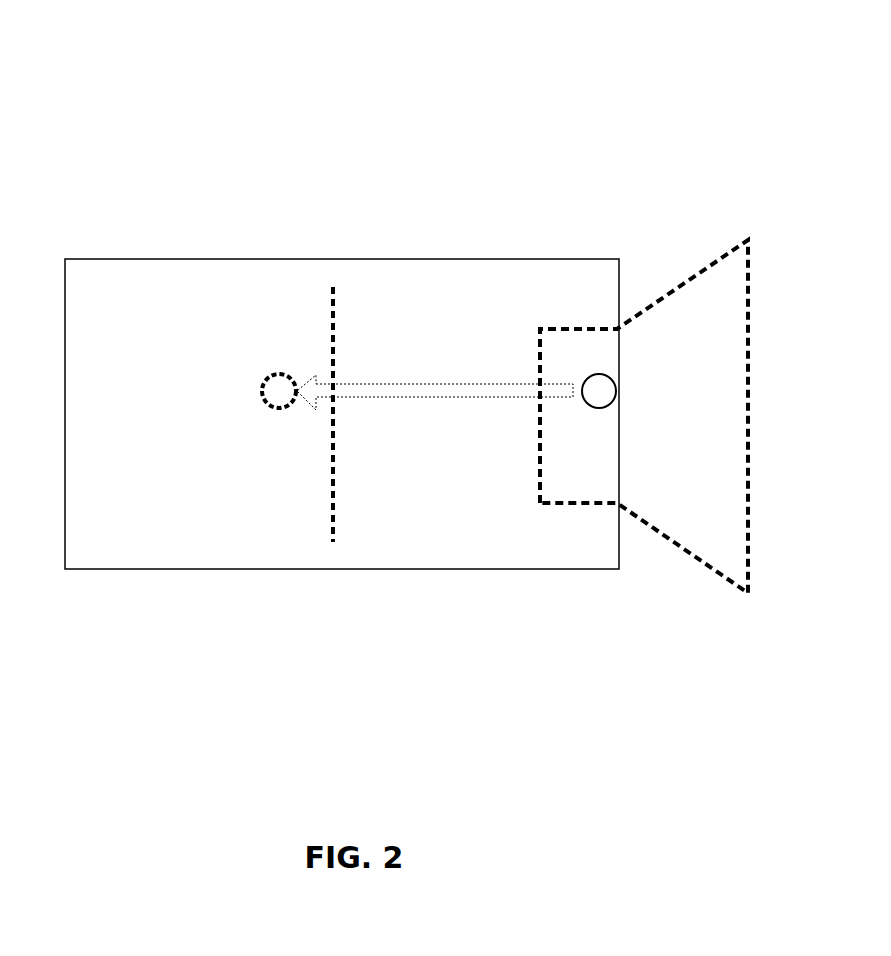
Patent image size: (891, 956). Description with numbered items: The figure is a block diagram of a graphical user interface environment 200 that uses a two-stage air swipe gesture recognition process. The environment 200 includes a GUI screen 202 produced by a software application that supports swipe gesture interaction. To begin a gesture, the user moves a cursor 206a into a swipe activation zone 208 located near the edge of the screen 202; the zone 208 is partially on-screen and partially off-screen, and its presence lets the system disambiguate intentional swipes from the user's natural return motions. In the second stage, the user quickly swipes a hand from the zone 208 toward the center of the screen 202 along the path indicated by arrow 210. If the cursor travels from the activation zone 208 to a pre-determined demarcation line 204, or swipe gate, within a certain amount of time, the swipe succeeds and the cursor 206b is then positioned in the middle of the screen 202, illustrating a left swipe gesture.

The graphical user interface environment 200 is at (815, 94).
The GUI screen 202 is at (118, 259).
The demarcation line 204 is at (336, 317).
The cursor 206a is at (617, 385).
The cursor 206b is at (272, 376).
The swipe activation zone 208 is at (752, 284).
The arrow 210 is at (398, 385).